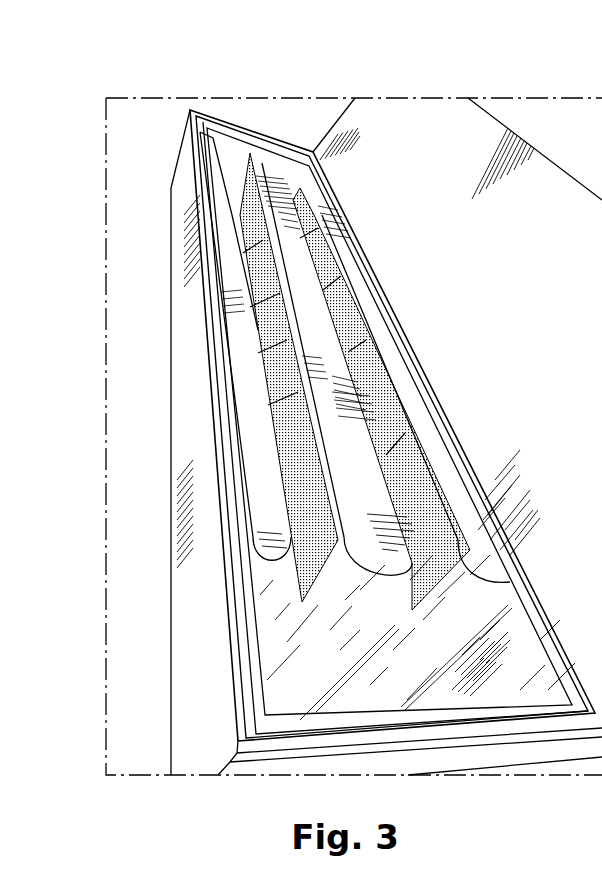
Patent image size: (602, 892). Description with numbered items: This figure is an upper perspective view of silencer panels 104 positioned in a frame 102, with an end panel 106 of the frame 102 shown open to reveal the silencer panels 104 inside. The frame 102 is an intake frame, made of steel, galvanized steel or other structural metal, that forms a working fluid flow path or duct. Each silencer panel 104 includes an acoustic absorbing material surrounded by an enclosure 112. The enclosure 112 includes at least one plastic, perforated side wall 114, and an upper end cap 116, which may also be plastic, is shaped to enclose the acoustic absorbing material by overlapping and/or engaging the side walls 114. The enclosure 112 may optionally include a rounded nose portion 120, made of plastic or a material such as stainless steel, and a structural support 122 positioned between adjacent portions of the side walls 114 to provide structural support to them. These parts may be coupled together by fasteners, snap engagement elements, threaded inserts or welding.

The frame 102 is at (178, 256).
The silencer panel 104 is at (312, 329).
The end panel 106 is at (435, 162).
The enclosure 112 is at (298, 425).
The perforated side wall 114 is at (310, 505).
The upper end cap 116 is at (337, 458).
The nose portion 120 is at (343, 597).
The structural support 122 is at (296, 411).